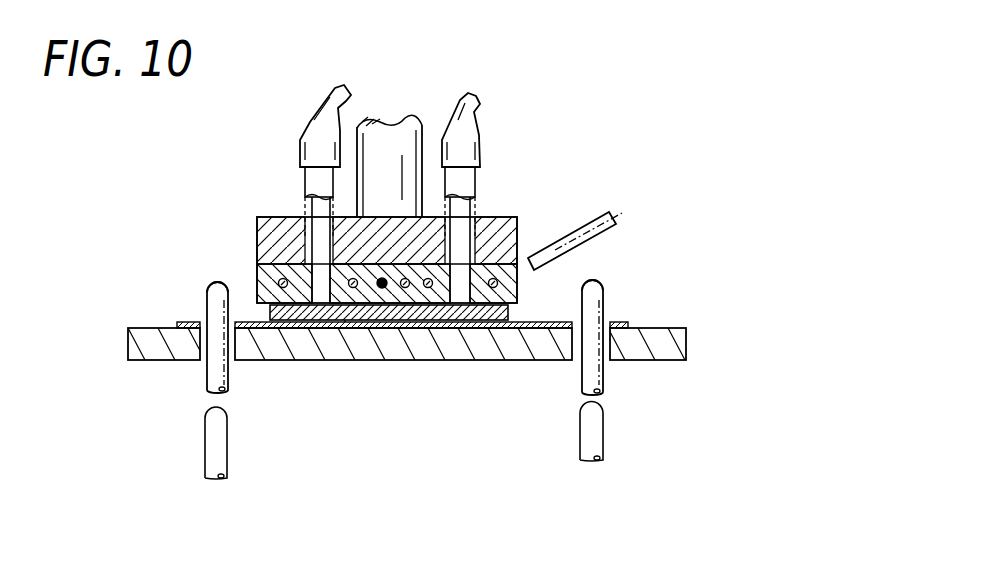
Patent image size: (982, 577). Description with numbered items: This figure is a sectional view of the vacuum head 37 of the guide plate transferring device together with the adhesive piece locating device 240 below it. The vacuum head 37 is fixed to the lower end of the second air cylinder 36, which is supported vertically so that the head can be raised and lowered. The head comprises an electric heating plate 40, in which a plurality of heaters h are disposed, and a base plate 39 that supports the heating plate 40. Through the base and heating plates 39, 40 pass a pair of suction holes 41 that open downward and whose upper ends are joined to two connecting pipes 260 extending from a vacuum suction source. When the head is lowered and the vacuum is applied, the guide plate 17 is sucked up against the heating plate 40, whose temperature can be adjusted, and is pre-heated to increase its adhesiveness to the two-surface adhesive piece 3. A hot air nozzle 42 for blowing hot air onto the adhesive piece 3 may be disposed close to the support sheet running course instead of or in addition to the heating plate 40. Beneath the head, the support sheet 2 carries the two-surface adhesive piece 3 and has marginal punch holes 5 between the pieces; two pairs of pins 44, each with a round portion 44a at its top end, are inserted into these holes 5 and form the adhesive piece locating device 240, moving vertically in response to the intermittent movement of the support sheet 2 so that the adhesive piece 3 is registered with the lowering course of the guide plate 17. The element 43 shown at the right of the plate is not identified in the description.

The support sheet 2 is at (394, 307).
The two-surface adhesive piece 3 is at (413, 367).
The marginal punch hole 5 is at (603, 318).
The heater h is at (345, 326).
The guide plate 17 is at (385, 320).
The second air cylinder 36 is at (399, 128).
The vacuum head 37 is at (351, 213).
The base plate 39 is at (257, 238).
The electric heating plate 40 is at (257, 285).
The suction hole 41 is at (313, 247).
The hot air nozzle 42 is at (578, 232).
The plate right portion 43 is at (668, 360).
The pin 44 is at (393, 330).
The round portion 44a is at (207, 290).
The adhesive piece locating device 240 is at (200, 488).
The connecting pipe 260 is at (316, 128).